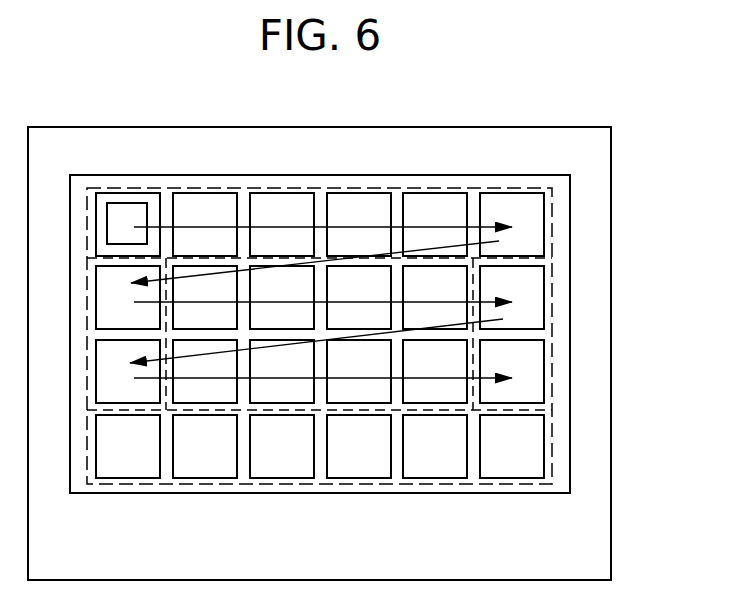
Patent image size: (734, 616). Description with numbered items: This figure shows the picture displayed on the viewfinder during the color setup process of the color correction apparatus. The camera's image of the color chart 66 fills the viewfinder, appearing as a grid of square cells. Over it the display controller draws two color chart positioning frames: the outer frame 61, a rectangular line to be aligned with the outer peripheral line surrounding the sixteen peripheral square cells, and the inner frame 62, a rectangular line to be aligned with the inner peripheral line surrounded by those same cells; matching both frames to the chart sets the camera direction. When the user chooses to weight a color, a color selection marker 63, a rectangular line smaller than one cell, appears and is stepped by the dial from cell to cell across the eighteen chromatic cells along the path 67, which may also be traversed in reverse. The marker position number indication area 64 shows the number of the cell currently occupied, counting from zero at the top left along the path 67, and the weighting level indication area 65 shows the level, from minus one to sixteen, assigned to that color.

The outer frame 61 is at (540, 259).
The inner frame 62 is at (553, 337).
The color selection marker 63 is at (118, 203).
The marker position number indication area 64 is at (448, 520).
The weighting level indication area 65 is at (448, 548).
The image of the color chart 66 is at (573, 202).
The path 67 is at (450, 226).